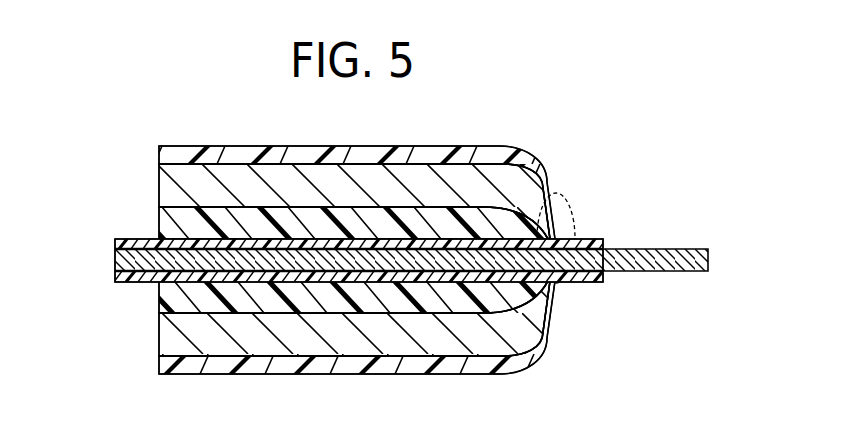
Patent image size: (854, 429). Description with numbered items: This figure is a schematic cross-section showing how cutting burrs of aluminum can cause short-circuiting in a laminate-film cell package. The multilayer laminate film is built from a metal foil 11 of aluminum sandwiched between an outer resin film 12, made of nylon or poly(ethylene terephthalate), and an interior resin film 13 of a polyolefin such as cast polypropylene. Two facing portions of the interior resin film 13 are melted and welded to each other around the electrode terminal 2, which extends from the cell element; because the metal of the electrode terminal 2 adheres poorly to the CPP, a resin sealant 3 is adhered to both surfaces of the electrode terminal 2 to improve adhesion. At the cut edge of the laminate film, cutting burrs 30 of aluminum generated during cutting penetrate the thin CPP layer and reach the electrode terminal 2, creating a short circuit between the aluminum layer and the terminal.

The electrode terminal 2 is at (693, 250).
The sealant 3 is at (605, 283).
The metal foil 11 is at (167, 193).
The resin film 12 is at (167, 156).
The resin film 13 is at (167, 220).
The cutting burrs 30 is at (558, 195).